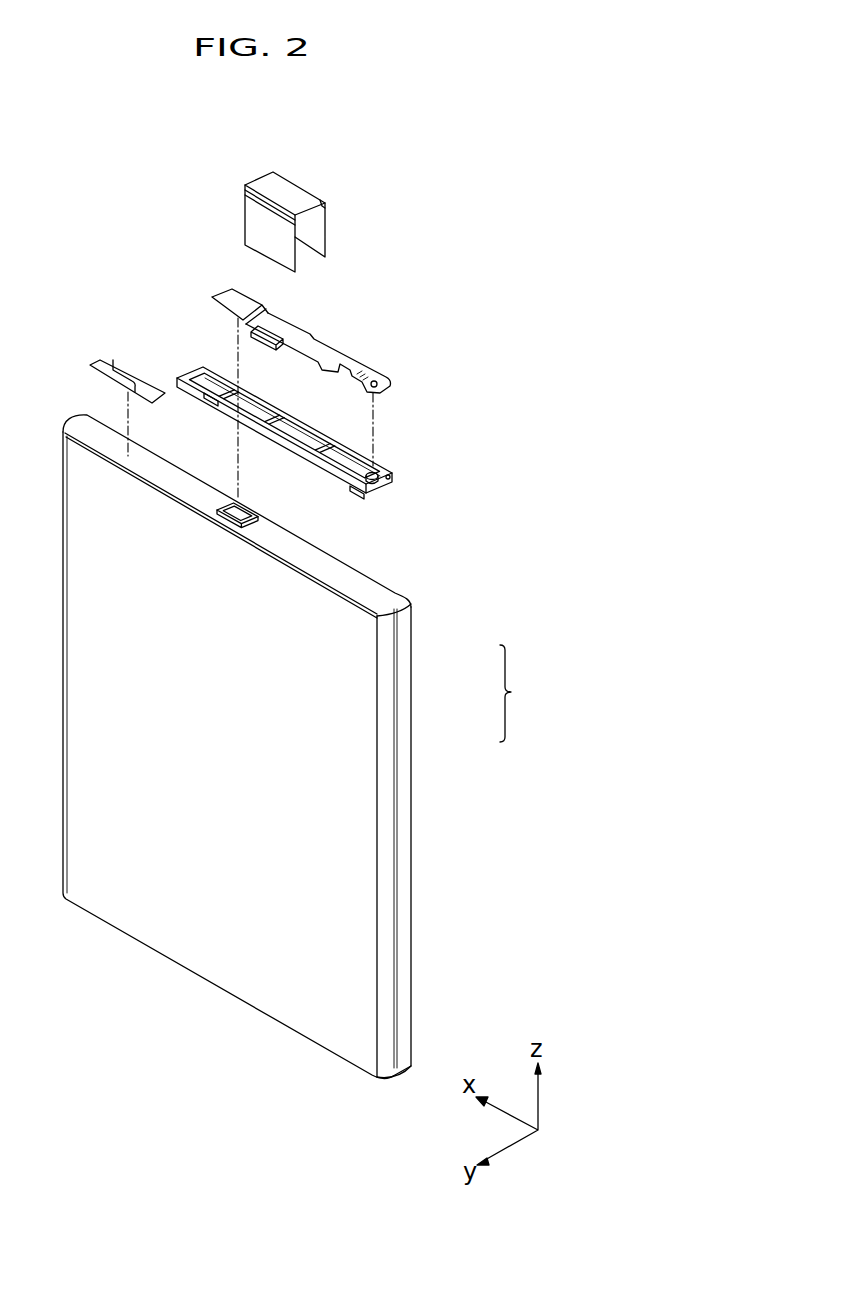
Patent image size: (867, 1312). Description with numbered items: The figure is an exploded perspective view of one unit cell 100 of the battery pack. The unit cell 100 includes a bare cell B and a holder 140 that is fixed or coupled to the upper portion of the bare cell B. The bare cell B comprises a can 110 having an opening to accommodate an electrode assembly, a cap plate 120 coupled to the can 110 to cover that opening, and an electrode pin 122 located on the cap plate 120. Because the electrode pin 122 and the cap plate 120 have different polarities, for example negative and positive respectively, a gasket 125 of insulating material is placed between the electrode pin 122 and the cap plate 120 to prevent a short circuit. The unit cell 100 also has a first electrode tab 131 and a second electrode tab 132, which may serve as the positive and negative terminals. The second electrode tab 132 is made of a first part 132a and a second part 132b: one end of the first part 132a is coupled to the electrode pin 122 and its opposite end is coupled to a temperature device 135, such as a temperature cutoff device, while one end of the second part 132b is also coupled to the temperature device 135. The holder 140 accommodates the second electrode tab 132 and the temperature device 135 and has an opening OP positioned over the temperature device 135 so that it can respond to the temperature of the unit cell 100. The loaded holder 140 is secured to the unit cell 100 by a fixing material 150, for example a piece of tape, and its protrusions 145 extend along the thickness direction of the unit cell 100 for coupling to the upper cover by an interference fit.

The unit cell 100 is at (486, 211).
The can 110 is at (405, 778).
The cap plate 120 is at (394, 603).
The electrode pin 122 is at (222, 521).
The gasket 125 is at (248, 527).
The first electrode tab 131 is at (103, 362).
The second electrode tab 132 is at (431, 274).
The first part 132a is at (250, 302).
The second part 132b is at (343, 351).
The temperature device 135 is at (280, 336).
The holder 140 is at (398, 481).
The protrusions 145 is at (213, 405).
The fixing material 150 is at (293, 188).
The opening op is at (287, 432).
The bare cell B is at (516, 693).